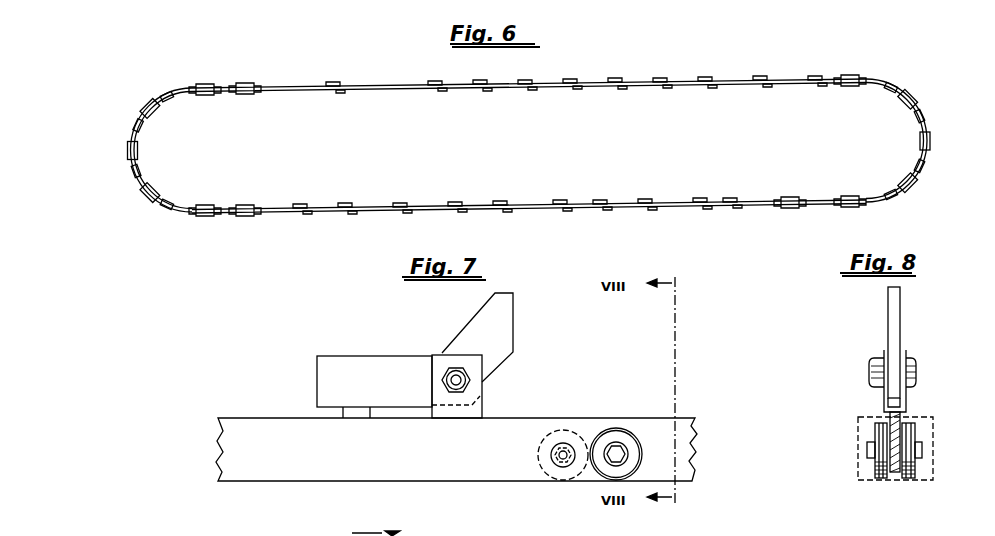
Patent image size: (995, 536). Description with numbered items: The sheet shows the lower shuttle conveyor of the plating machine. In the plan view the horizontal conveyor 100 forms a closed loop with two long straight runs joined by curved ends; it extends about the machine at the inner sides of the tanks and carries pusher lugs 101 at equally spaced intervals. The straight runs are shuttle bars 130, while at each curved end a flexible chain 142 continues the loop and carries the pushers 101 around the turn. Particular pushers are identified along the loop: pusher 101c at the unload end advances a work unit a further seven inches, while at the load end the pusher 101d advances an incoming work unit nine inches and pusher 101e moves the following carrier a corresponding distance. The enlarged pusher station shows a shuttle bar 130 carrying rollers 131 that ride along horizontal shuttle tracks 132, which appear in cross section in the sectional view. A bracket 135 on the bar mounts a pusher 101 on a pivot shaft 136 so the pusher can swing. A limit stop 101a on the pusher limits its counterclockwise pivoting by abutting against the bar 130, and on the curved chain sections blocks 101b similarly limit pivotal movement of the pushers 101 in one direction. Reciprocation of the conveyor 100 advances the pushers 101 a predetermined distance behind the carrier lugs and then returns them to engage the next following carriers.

In FIG. 6, the horizontal conveyor 100 is at (529, 154).
In FIG. 6, the pusher lug 101 is at (158, 108).
In FIG. 7, the pusher lug 101 is at (506, 320).
In FIG. 8, the pusher lug 101 is at (900, 321).
In FIG. 6, the limit stop 101a is at (447, 211).
In FIG. 7, the limit stop 101a is at (343, 415).
In FIG. 6, the block 101b is at (392, 211).
In FIG. 6, the pusher 101c is at (262, 77).
In FIG. 6, the lower conveyor pusher 101d is at (212, 216).
In FIG. 6, the pusher 101e is at (160, 200).
In FIG. 6, the shuttle bar 130 is at (386, 91).
In FIG. 7, the shuttle bar 130 is at (266, 480).
In FIG. 8, the shuttle bar 130 is at (895, 476).
In FIG. 6, the roller 131 is at (334, 84).
In FIG. 7, the roller 131 is at (610, 430).
In FIG. 8, the roller 131 is at (912, 432).
In FIG. 8, the shuttle track 132 is at (934, 458).
In FIG. 7, the bracket 135 is at (470, 382).
In FIG. 8, the bracket 135 is at (908, 400).
In FIG. 7, the pivot shaft 136 is at (455, 368).
In FIG. 8, the pivot shaft 136 is at (870, 372).
In FIG. 6, the chain 142 is at (921, 175).